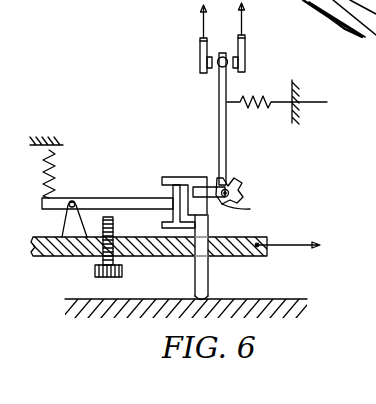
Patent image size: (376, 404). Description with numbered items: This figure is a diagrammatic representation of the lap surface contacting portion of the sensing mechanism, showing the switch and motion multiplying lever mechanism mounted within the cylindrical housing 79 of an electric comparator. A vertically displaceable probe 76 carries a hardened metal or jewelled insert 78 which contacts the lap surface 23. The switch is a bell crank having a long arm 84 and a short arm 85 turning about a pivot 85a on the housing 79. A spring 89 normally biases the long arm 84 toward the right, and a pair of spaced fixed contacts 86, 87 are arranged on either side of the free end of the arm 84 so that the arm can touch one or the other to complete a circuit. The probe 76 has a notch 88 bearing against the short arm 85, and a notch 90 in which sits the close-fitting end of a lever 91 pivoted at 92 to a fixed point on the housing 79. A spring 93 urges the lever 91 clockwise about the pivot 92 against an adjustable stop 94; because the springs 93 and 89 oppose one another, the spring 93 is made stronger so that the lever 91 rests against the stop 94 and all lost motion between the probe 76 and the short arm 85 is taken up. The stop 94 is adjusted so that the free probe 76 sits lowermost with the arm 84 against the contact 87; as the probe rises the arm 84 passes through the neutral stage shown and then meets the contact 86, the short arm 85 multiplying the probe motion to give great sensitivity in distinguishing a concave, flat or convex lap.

The fixed contact 87 is at (200, 65).
The fixed contact 86 is at (246, 65).
The long arm 84 is at (226, 130).
The spring 89 is at (266, 95).
The cylindrical housing 79 is at (48, 140).
The spring 93 is at (62, 153).
The lever 91 is at (111, 179).
The pivot 92 is at (73, 200).
The adjustable stop 94 is at (113, 229).
The notch 90 is at (163, 198).
The notch 88 is at (190, 192).
The short arm 85 is at (214, 187).
The pivot 85a is at (250, 209).
The probe 76 is at (208, 268).
The jewelled insert 78 is at (208, 297).
The lap surface 23 is at (272, 299).